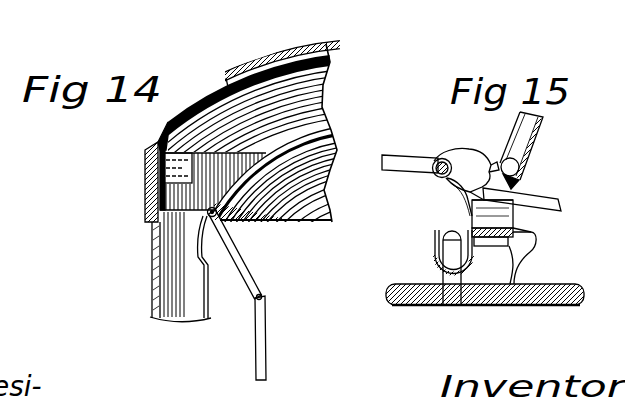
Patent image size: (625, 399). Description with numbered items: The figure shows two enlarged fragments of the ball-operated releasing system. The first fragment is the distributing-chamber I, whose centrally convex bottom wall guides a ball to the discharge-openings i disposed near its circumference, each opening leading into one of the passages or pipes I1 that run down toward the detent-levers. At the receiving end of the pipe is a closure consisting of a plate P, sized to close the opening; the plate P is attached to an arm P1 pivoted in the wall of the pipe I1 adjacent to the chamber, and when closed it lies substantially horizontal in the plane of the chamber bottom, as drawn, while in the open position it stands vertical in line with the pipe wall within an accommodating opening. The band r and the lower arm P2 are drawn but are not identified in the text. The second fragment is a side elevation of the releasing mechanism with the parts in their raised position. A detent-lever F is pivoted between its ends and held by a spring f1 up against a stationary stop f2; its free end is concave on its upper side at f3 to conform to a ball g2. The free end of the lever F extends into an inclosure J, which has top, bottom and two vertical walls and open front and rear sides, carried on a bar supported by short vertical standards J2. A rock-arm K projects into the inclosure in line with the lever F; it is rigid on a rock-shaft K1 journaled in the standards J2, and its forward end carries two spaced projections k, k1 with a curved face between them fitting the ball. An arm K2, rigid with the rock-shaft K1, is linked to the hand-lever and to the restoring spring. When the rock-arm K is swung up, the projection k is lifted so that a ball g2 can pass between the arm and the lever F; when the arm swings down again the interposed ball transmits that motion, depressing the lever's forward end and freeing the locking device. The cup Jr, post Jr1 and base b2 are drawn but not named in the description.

In FIG. 14, the distributing-chamber I is at (301, 47).
In FIG. 14, the rim band r is at (237, 80).
In FIG. 14, the plate P is at (158, 192).
In FIG. 14, the discharge-openings i is at (177, 217).
In FIG. 14, the passages or pipes I1 is at (153, 253).
In FIG. 15, the passages or pipes I1 is at (535, 140).
In FIG. 14, the arm P1 is at (238, 251).
In FIG. 14, the lower arm P2 is at (265, 343).
In FIG. 15, the arm K2 is at (413, 160).
In FIG. 15, the rock-shaft K1 is at (438, 172).
In FIG. 15, the rock-arm K is at (456, 186).
In FIG. 15, the projection k is at (497, 160).
In FIG. 15, the projection k1 is at (474, 214).
In FIG. 15, the inclosure J is at (473, 150).
In FIG. 15, the standards J2 is at (494, 282).
In FIG. 15, the cup Jr is at (437, 238).
In FIG. 15, the post Jr1 is at (445, 275).
In FIG. 15, the concave upper side f3 is at (473, 222).
In FIG. 15, the stop f2 is at (531, 206).
In FIG. 15, the spring f1 is at (513, 248).
In FIG. 15, the detent-lever F is at (553, 194).
In FIG. 15, the weights or balls g2 is at (521, 168).
In FIG. 15, the base b2 is at (584, 286).